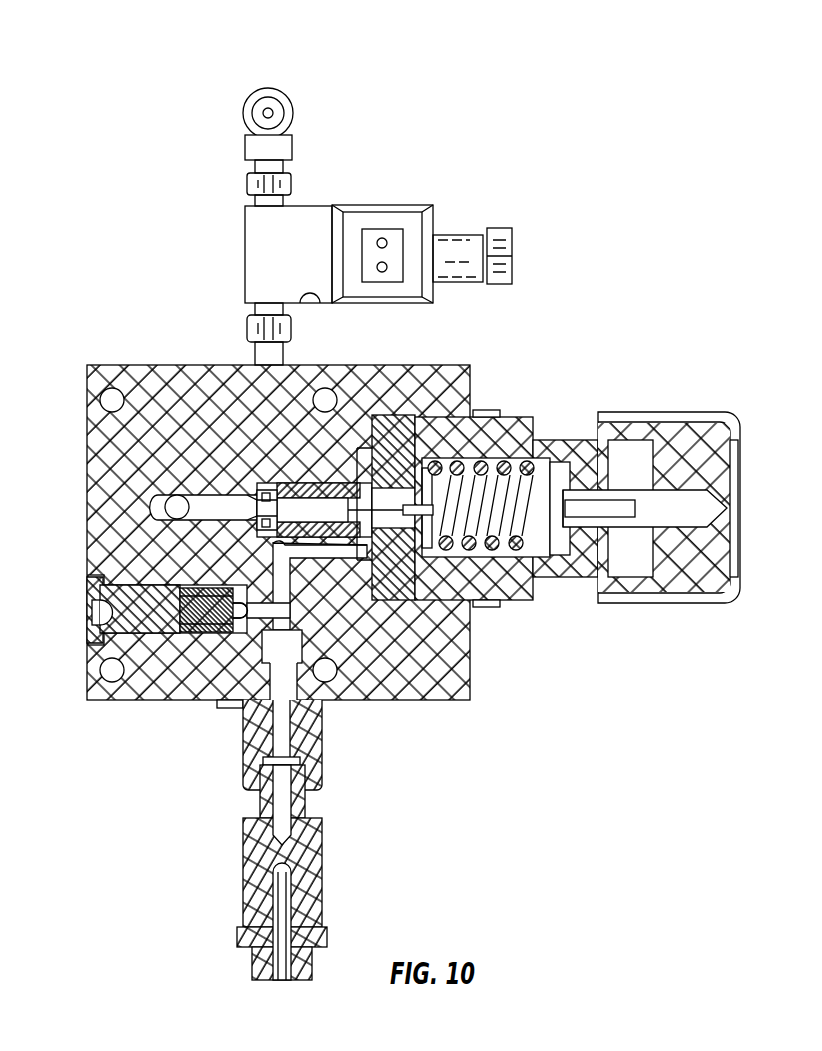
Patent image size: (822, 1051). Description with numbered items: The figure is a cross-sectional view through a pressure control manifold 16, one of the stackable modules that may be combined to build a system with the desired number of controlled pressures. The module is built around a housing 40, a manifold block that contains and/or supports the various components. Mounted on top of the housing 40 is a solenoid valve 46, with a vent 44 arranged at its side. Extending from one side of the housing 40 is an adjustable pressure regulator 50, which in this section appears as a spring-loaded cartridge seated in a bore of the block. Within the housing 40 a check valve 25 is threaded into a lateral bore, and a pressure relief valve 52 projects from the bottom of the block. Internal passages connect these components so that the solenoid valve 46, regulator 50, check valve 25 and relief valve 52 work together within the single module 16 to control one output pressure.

The pressure control manifold 16 is at (85, 49).
The check valve 25 is at (200, 632).
The housing 40 is at (87, 437).
The vent 44 is at (512, 243).
The solenoid valve 46 is at (372, 204).
The adjustable pressure regulator 50 is at (740, 590).
The pressure relief valve 52 is at (322, 848).